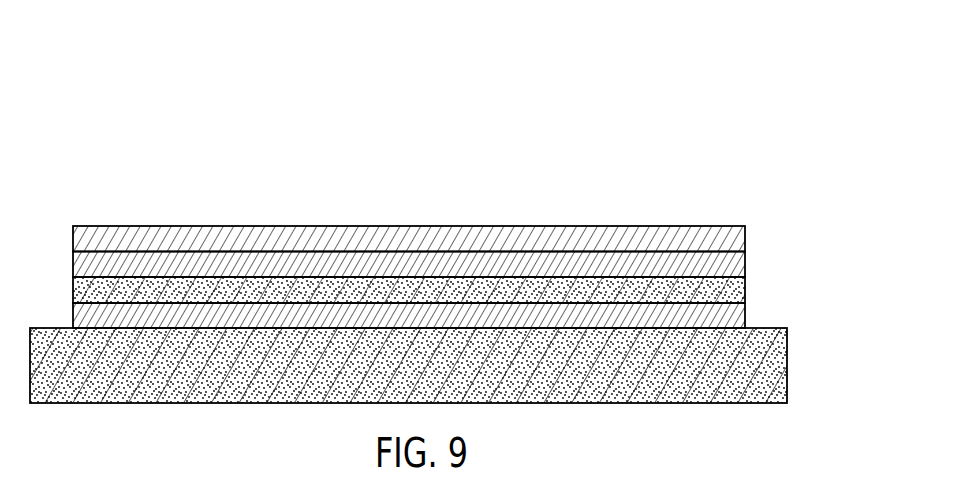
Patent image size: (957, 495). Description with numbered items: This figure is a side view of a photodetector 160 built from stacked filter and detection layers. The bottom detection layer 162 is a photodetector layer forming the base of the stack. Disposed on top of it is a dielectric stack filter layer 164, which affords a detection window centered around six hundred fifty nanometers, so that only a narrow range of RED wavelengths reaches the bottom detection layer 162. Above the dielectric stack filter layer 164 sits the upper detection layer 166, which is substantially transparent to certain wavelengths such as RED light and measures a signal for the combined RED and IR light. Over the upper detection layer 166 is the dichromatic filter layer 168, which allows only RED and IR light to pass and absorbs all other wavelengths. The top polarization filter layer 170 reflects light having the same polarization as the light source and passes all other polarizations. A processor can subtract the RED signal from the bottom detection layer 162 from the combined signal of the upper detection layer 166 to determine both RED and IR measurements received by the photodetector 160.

The photodetector 160 is at (587, 133).
The bottom detection layer 162 is at (695, 403).
The dielectric stack filter layer 164 is at (745, 313).
The upper detection layer 166 is at (745, 285).
The dichromatic filter layer 168 is at (745, 258).
The polarization filter layer 170 is at (745, 232).